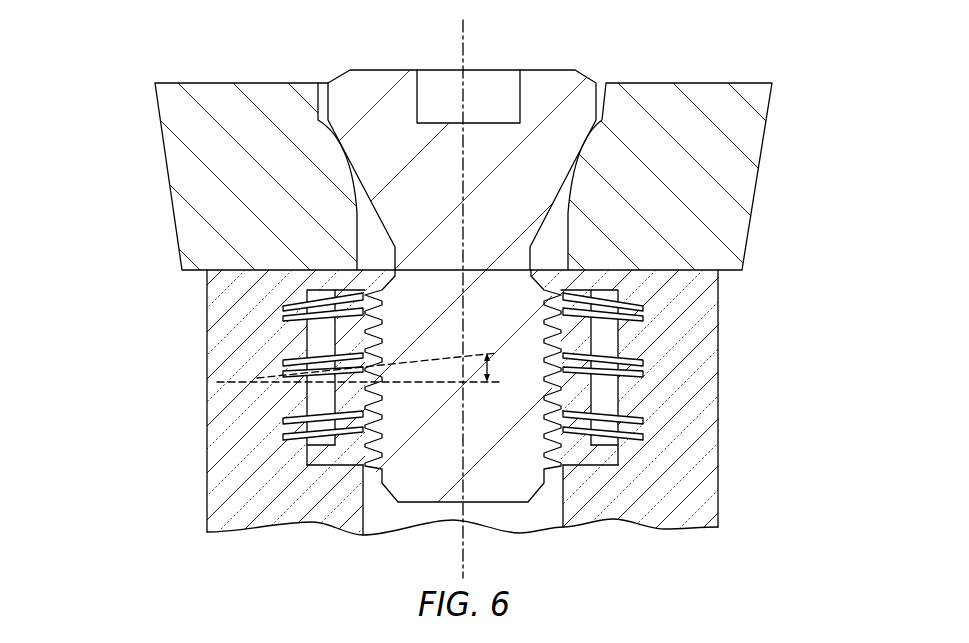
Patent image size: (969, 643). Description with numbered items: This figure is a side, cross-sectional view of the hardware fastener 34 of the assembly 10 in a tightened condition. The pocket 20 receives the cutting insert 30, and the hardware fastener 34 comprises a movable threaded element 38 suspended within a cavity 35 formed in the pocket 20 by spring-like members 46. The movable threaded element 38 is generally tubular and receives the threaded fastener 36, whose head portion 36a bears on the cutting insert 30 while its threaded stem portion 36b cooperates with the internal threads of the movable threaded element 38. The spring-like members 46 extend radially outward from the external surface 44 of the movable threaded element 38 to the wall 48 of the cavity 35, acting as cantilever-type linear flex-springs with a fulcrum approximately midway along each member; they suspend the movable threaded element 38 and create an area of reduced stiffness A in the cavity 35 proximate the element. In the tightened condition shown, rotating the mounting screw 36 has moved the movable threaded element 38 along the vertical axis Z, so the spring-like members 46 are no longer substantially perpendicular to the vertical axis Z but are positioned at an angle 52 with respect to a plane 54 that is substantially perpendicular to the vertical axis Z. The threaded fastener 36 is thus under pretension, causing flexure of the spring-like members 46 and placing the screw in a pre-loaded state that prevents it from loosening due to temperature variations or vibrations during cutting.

The fastening assembly 10 is at (86, 106).
The pocket 20 is at (775, 176).
The cutting insert 30 is at (748, 72).
The hardware fastener 34 is at (630, 460).
The cavity 35 is at (318, 452).
The threaded fastener 36 is at (554, 64).
The head portion 36a is at (573, 92).
The threaded stem portion 36b is at (507, 470).
The movable threaded element 38 is at (327, 338).
The external surface 44 is at (592, 337).
The spring-like members 46 is at (290, 310).
The wall 48 is at (608, 398).
The angle 52 is at (490, 373).
The plane 54 is at (422, 382).
The area of reduced stiffness A is at (321, 298).
The vertical axis Z is at (467, 47).